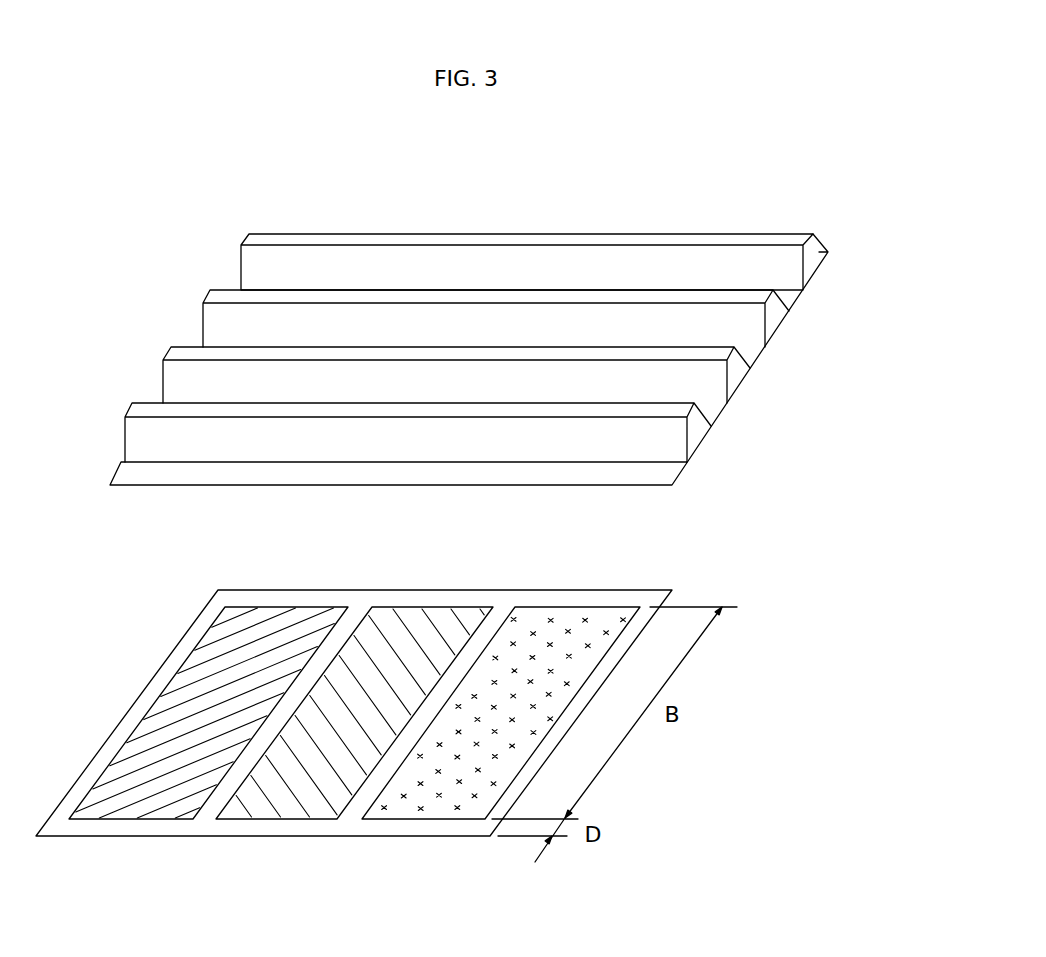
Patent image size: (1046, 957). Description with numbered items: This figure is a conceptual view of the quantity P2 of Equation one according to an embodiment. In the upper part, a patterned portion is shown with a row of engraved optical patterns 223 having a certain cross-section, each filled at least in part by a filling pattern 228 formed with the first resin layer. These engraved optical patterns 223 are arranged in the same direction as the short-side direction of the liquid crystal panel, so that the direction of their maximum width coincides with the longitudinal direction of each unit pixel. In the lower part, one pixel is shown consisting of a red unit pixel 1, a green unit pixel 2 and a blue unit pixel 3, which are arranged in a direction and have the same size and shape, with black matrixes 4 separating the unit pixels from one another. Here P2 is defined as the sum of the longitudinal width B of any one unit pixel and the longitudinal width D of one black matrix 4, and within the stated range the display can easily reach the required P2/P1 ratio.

The engraved optical pattern 223 is at (748, 238).
The filling pattern 228 is at (813, 264).
The red unit pixel 1 is at (147, 816).
The green unit pixel 2 is at (293, 816).
The blue unit pixel 3 is at (437, 816).
The black matrix 4 is at (72, 829).